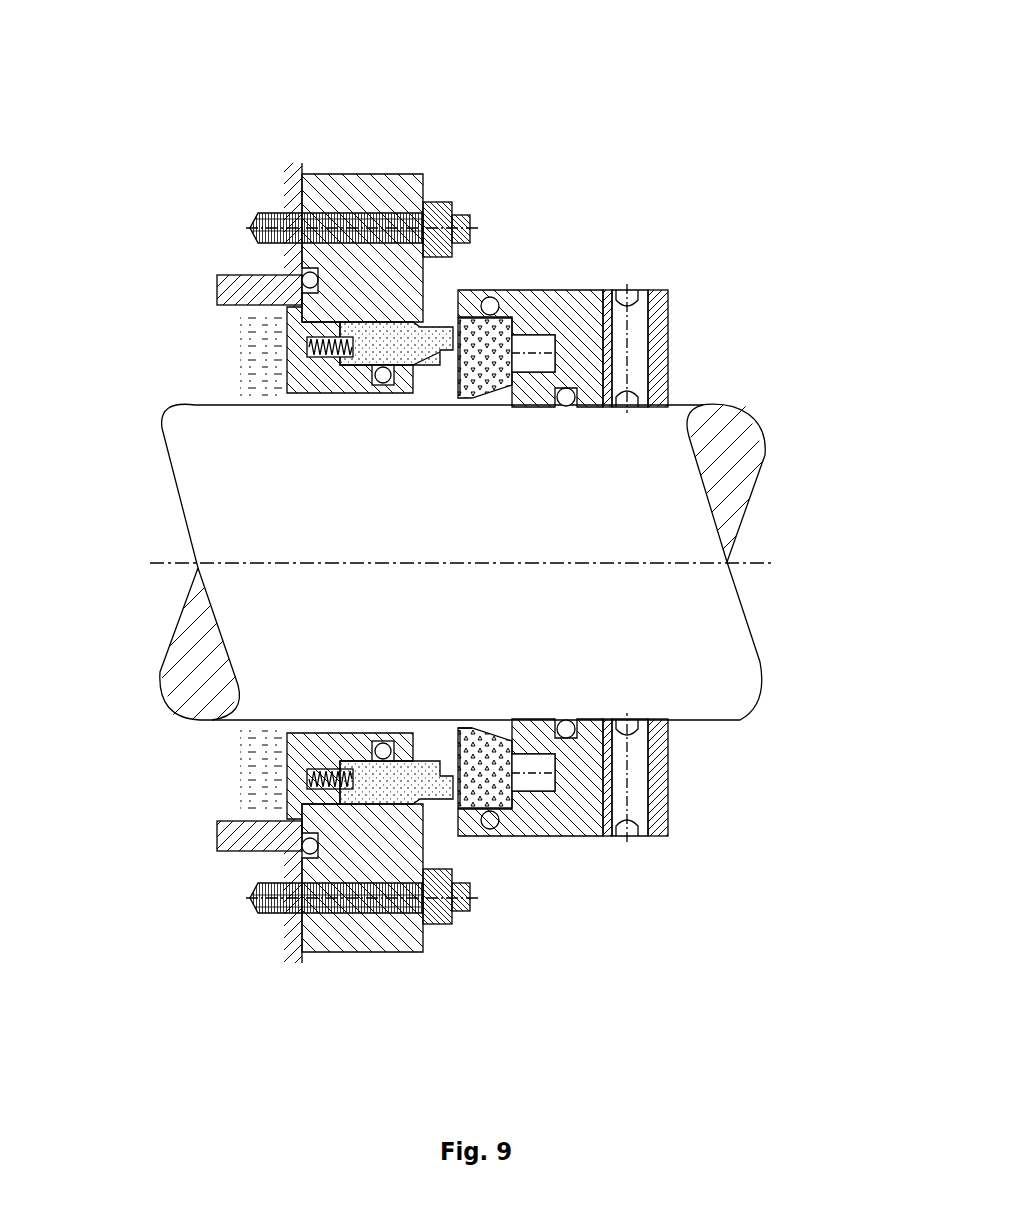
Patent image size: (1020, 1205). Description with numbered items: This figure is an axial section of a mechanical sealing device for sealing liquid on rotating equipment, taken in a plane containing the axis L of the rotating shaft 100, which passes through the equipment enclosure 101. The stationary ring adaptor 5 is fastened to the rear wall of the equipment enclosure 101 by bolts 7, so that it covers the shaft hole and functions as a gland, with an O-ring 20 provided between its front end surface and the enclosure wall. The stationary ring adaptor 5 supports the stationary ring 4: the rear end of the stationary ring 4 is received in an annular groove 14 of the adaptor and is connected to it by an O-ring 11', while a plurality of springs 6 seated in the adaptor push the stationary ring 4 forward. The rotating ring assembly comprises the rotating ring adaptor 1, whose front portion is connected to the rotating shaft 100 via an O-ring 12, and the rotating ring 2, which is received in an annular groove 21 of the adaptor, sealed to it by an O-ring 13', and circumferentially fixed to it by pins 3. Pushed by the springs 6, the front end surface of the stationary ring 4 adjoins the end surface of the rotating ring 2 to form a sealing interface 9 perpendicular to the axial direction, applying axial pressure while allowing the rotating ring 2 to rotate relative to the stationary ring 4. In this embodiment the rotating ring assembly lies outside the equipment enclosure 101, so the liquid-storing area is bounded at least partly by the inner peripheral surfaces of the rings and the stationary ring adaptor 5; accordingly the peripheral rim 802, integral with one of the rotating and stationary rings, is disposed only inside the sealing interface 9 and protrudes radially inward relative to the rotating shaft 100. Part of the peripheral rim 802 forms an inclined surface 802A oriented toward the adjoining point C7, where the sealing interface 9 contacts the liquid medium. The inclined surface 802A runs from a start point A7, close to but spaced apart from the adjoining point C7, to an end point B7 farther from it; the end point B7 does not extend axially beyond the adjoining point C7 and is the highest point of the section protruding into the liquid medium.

The rotating shaft 100 is at (755, 488).
The axis L is at (473, 570).
The equipment enclosure 101 is at (228, 208).
The O-ring 20 is at (300, 280).
The stationary ring adaptor 5 is at (350, 188).
The bolts 7 is at (437, 210).
The annular groove 14 is at (312, 390).
The stationary ring 4 is at (423, 347).
The springs 6 is at (307, 340).
The adjoining point C7 is at (418, 358).
The O-ring 13' is at (575, 250).
The rotating ring 2 is at (510, 345).
The end point B7 is at (460, 357).
The rotating ring adaptor 1 is at (657, 303).
The start point A7 is at (640, 350).
The O-ring 12 is at (640, 393).
The O-ring 11' is at (350, 882).
The inclined surface 802A is at (482, 763).
The pins 3 is at (553, 763).
The peripheral rim 802 is at (488, 742).
The annular groove 21 is at (527, 797).
The sealing interface 9 is at (455, 790).